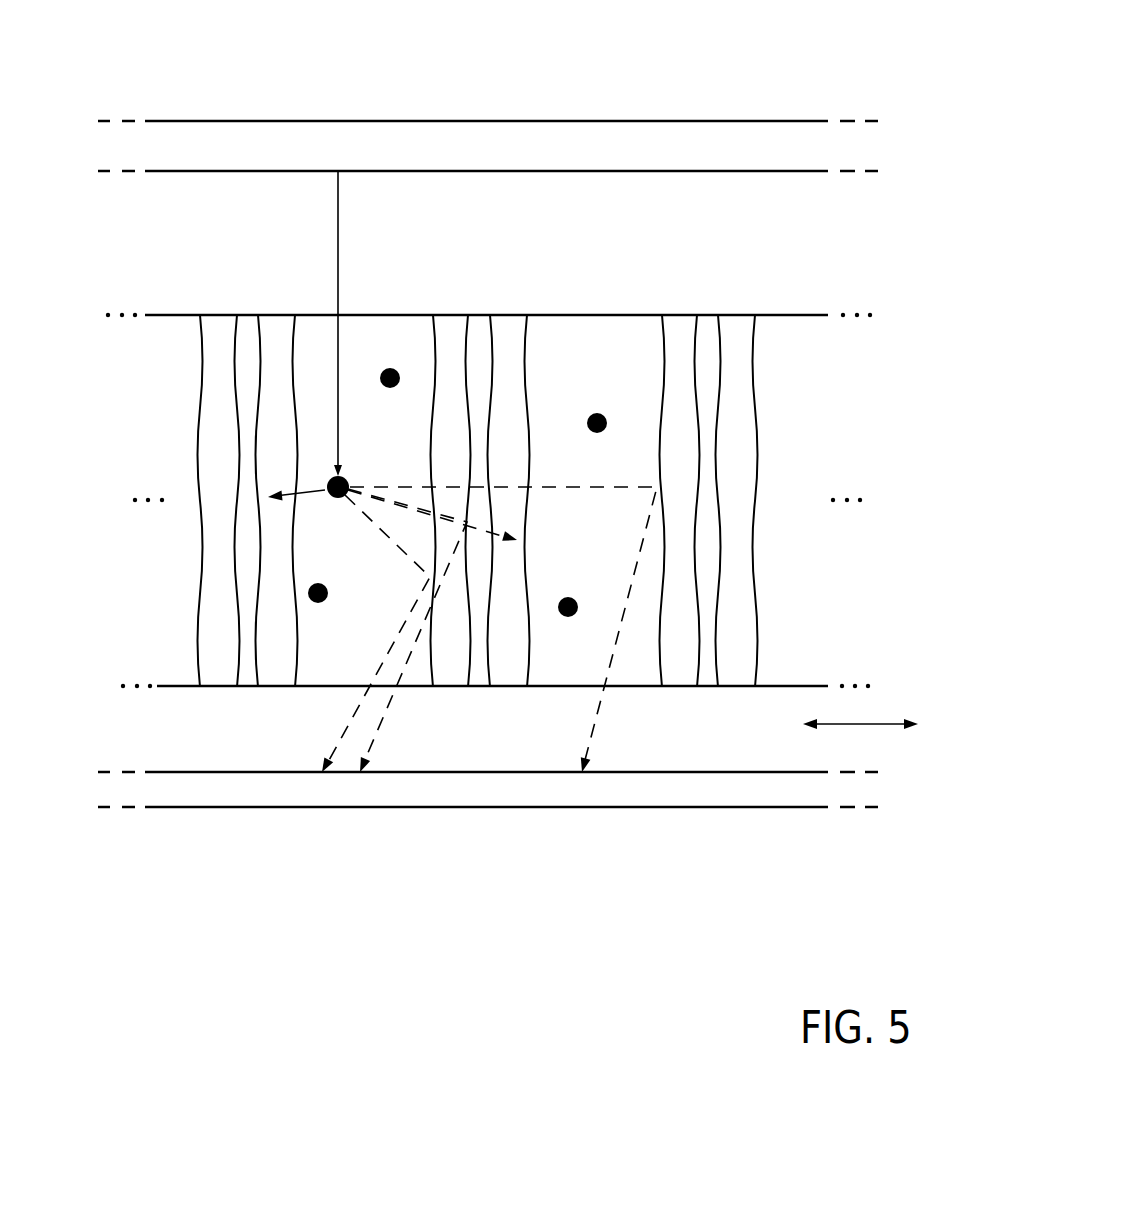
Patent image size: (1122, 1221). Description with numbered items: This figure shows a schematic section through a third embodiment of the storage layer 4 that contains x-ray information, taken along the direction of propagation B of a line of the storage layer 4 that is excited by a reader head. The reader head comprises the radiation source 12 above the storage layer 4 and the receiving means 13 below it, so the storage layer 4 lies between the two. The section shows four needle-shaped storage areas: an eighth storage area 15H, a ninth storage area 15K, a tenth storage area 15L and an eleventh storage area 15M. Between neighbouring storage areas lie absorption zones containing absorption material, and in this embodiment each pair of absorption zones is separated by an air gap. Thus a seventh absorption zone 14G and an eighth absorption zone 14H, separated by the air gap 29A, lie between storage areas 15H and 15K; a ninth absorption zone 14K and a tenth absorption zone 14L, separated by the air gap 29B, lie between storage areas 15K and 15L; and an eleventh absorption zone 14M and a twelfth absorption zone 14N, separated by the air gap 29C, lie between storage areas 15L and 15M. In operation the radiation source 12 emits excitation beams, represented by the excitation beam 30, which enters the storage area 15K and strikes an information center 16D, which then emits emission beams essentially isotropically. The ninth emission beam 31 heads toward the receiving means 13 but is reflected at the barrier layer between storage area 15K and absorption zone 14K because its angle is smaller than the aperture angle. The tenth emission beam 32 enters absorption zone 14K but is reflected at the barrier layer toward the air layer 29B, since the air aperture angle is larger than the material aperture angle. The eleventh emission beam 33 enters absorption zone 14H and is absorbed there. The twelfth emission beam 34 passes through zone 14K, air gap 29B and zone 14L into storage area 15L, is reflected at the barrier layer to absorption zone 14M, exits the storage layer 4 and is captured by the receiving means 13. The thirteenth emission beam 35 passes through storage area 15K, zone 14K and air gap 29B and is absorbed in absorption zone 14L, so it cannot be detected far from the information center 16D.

The radiation source 12 is at (670, 133).
The receiving means 13 is at (662, 795).
The storage layer 4 is at (124, 660).
The seventh absorption zone 14G is at (218, 323).
The eighth absorption zone 14H is at (278, 325).
The ninth absorption zone 14K is at (452, 325).
The tenth absorption zone 14L is at (512, 325).
The eleventh absorption zone 14M is at (680, 325).
The twelfth absorption zone 14N is at (738, 325).
The air gap 29A is at (245, 327).
The air gap 29B is at (480, 325).
The air gap 29C is at (710, 327).
The eighth needle-shaped storage area 15H is at (145, 418).
The ninth needle-shaped storage area 15K is at (383, 330).
The tenth needle-shaped storage area 15L is at (596, 335).
The eleventh needle-shaped storage area 15M is at (830, 392).
The excitation beam 30 is at (340, 208).
The information center 16D is at (350, 480).
The ninth emission beam 31 is at (400, 630).
The tenth emission beam 32 is at (373, 733).
The eleventh emission beam 33 is at (312, 491).
The twelfth emission beam 34 is at (627, 490).
The thirteenth emission beam 35 is at (490, 518).
The direction of propagation B is at (872, 723).